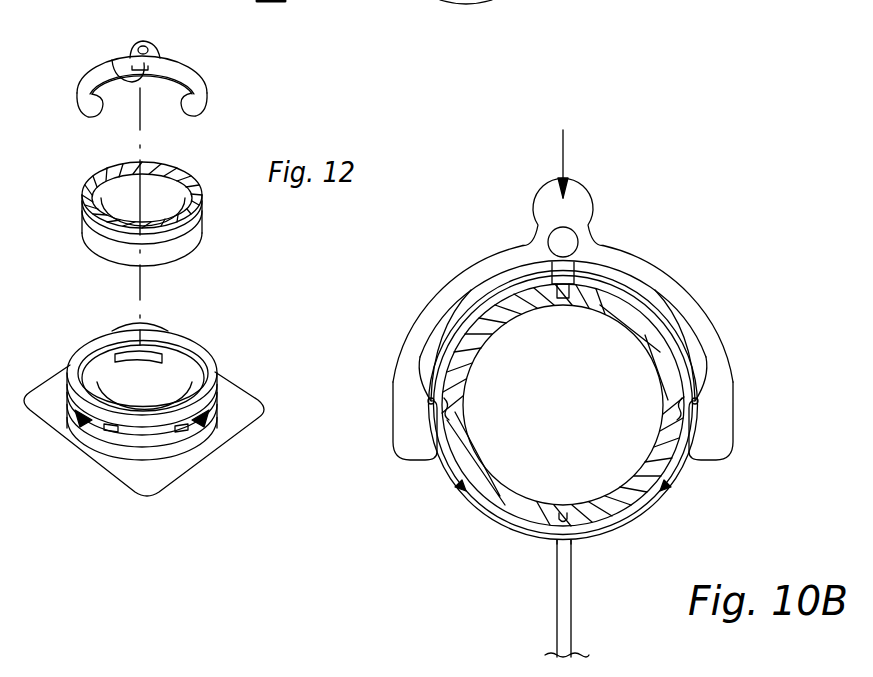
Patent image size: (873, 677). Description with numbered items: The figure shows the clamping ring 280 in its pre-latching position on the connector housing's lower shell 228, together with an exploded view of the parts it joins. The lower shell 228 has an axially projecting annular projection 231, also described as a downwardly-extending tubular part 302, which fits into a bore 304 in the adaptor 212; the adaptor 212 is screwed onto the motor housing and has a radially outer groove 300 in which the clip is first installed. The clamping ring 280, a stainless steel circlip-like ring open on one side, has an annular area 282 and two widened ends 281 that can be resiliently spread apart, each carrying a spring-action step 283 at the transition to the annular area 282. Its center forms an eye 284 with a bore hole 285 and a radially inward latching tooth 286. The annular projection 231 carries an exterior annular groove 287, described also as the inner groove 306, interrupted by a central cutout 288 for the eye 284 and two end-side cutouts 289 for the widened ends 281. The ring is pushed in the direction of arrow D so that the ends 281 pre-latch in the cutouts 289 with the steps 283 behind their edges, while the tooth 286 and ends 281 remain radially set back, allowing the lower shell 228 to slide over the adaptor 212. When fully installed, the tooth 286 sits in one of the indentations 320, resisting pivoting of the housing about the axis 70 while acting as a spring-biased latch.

In FIG. 10B, the axis 70 is at (567, 407).
In FIG. 12, the axis 70 is at (140, 278).
In FIG. 12, the adaptor 212 is at (86, 343).
In FIG. 10B, the lower shell 228 is at (550, 622).
In FIG. 10B, the annular projection 231 is at (535, 548).
In FIG. 10B, the clamping ring 280 is at (565, 320).
In FIG. 12, the clamping ring 280 is at (198, 67).
In FIG. 10B, the widened ends 281 is at (413, 438).
In FIG. 12, the widened ends 281 is at (200, 105).
In FIG. 10B, the annular area 282 is at (407, 357).
In FIG. 10B, the spring-action step 283 is at (428, 400).
In FIG. 10B, the eye 284 is at (578, 230).
In FIG. 10B, the bore hole 285 is at (553, 237).
In FIG. 10B, the latching tooth 286 is at (554, 295).
In FIG. 12, the latching tooth 286 is at (112, 66).
In FIG. 10B, the exterior annular groove 287 is at (672, 332).
In FIG. 10B, the central cutout 288 is at (575, 297).
In FIG. 12, the central cutout 288 is at (160, 354).
In FIG. 10B, the end-side cutouts 289 is at (460, 490).
In FIG. 12, the end-side cutouts 289 is at (95, 420).
In FIG. 12, the radially outer groove 300 is at (128, 430).
In FIG. 10B, the tubular part 302 is at (665, 450).
In FIG. 12, the tubular part 302 is at (192, 177).
In FIG. 12, the bore 304 is at (190, 368).
In FIG. 12, the inner groove 306 is at (95, 240).
In FIG. 10B, the indentations 320 is at (568, 522).
In FIG. 10B, the arrow D is at (564, 153).